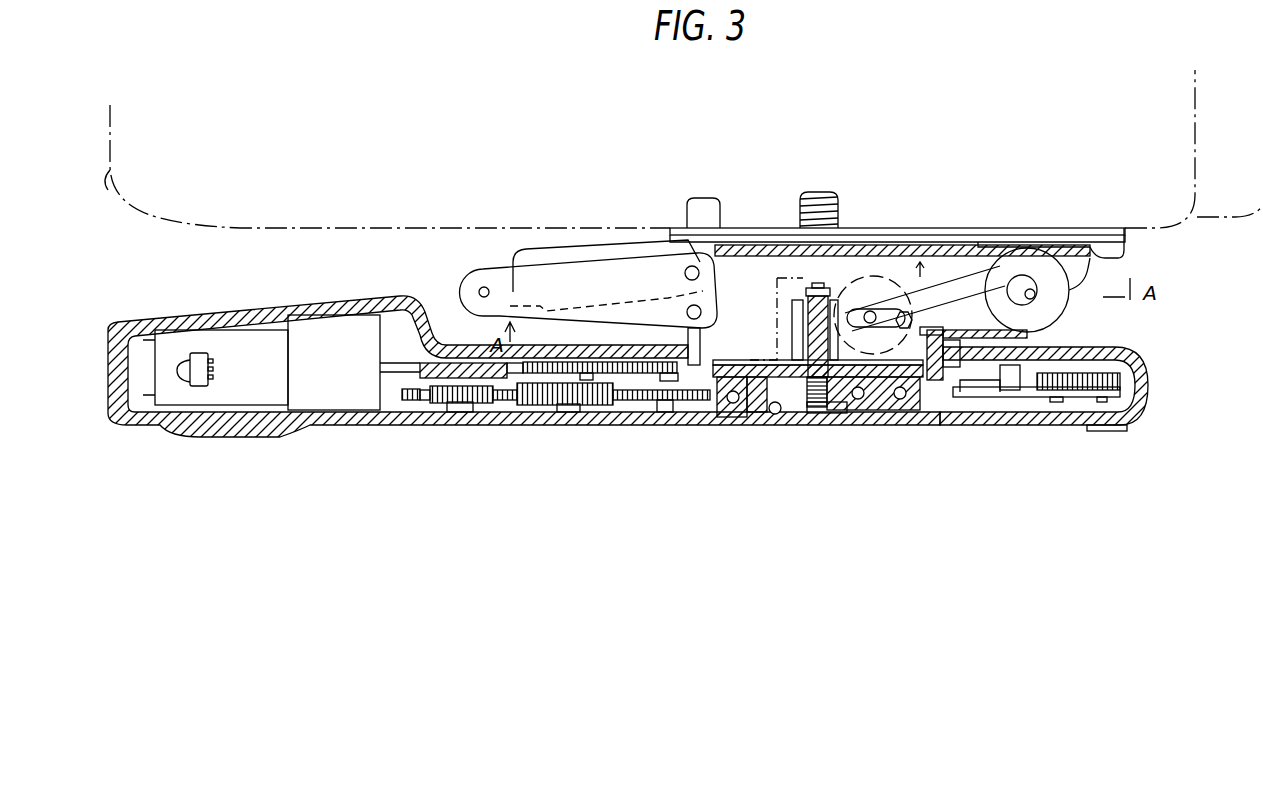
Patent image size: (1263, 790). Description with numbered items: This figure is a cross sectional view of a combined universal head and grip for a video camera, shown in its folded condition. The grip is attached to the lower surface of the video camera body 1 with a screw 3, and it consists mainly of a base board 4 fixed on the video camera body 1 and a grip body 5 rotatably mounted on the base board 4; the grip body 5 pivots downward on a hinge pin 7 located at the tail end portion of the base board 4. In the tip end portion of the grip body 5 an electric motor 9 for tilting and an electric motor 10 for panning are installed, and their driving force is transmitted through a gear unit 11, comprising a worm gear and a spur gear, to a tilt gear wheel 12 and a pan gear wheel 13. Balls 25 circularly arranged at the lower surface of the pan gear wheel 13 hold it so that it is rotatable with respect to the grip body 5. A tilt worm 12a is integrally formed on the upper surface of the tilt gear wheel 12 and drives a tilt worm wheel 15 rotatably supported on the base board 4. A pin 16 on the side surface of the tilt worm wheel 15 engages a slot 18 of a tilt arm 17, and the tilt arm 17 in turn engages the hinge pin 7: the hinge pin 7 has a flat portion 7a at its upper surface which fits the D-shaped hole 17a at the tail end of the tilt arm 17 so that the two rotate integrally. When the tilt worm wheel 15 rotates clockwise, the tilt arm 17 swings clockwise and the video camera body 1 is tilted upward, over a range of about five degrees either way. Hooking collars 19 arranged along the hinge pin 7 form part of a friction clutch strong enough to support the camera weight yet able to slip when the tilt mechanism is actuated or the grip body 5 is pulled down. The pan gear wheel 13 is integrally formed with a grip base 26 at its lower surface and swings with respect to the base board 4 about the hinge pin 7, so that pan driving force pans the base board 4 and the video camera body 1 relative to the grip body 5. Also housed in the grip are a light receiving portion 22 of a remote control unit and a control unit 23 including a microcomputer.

The video camera body 1 is at (679, 166).
The screw 3 is at (838, 245).
The base board 4 is at (1125, 256).
The grip body 5 is at (420, 424).
The hinge pin 7 is at (1027, 334).
The flat portion 7a is at (1022, 280).
The electric motor 9 is at (325, 395).
The electric motor 10 is at (443, 381).
The gear unit 11 is at (537, 406).
The tilt gear wheel 12 is at (763, 378).
The tilt worm 12a is at (800, 318).
The pan gear wheel 13 is at (835, 405).
The tilt worm wheel 15 is at (890, 278).
The pin 16 is at (870, 375).
The tilt arm 17 is at (960, 290).
The D-shaped hole 17a is at (1050, 293).
The slot 18 is at (913, 403).
The hooking collars 19 is at (1095, 250).
The light receiving portion 22 is at (180, 386).
The control unit 23 is at (1105, 380).
The balls 25 is at (730, 403).
The grip base 26 is at (1023, 337).